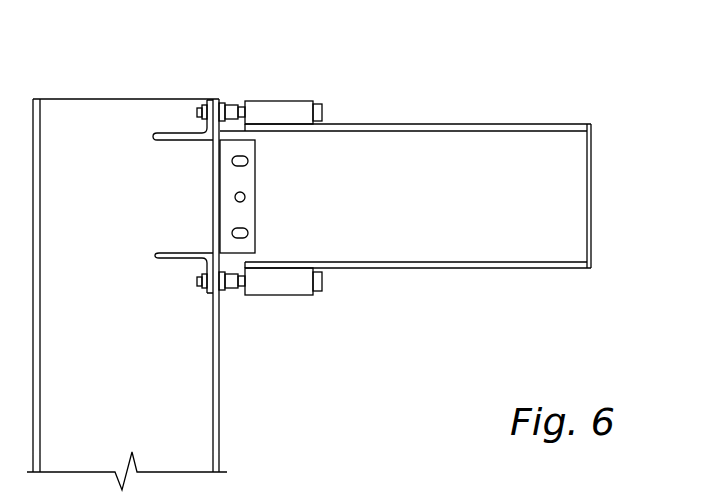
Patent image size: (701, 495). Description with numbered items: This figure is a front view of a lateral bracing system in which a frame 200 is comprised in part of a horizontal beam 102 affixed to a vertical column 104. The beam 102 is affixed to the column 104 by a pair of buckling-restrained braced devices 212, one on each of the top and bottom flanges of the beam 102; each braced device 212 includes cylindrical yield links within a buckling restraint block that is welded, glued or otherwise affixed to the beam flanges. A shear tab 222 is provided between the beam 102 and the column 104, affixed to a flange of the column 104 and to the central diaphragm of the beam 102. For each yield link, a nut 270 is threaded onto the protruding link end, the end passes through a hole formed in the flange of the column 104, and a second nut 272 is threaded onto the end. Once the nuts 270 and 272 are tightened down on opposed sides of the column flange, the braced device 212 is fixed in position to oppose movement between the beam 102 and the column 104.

The frame 200 is at (371, 191).
The horizontal beam 102 is at (508, 209).
The vertical column 104 is at (97, 303).
The buckling-restrained braced device 212 is at (298, 101).
The shear tab 222 is at (245, 212).
The nut 270 is at (221, 101).
The second nut 272 is at (211, 100).